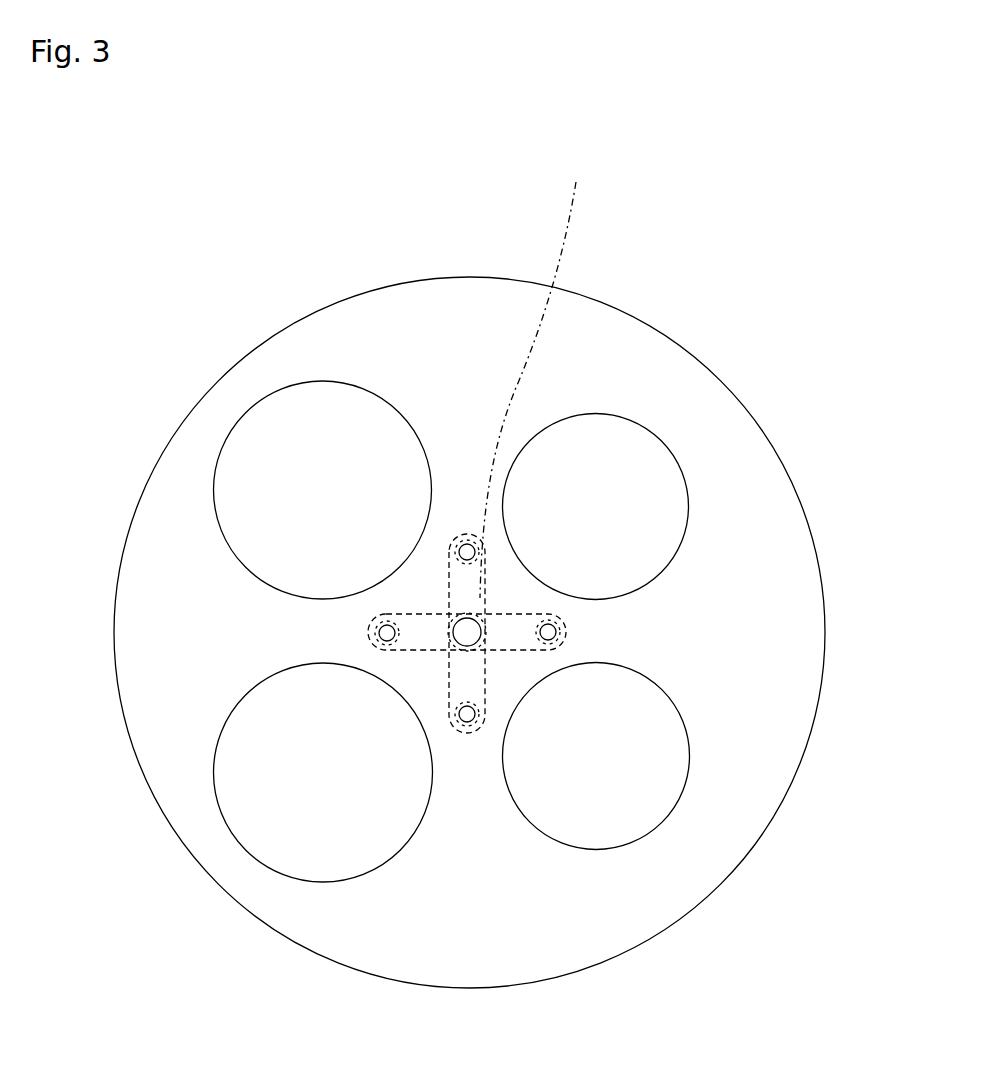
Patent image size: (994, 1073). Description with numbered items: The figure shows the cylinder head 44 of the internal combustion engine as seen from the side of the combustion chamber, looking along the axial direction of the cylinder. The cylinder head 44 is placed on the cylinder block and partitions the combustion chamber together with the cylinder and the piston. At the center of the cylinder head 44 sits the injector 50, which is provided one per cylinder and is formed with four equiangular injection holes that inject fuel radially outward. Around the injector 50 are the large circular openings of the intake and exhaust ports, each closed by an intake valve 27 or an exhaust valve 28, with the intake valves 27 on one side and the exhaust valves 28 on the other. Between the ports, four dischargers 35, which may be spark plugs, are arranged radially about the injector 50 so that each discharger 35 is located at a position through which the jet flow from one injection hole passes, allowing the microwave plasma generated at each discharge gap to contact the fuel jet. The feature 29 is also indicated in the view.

The intake valve 27 is at (247, 450).
The exhaust valve 28 is at (642, 483).
The groove 29 is at (472, 433).
The discharger 35 is at (468, 548).
The cylinder head 44 is at (798, 623).
The injector 50 is at (480, 642).